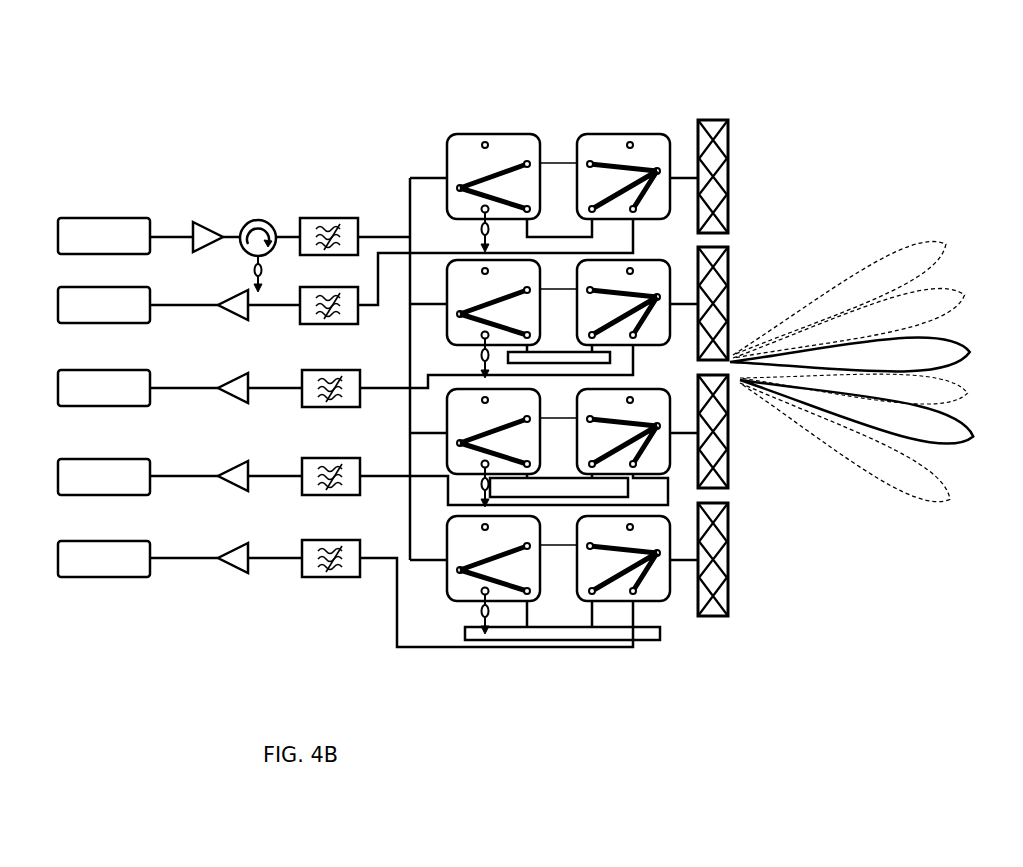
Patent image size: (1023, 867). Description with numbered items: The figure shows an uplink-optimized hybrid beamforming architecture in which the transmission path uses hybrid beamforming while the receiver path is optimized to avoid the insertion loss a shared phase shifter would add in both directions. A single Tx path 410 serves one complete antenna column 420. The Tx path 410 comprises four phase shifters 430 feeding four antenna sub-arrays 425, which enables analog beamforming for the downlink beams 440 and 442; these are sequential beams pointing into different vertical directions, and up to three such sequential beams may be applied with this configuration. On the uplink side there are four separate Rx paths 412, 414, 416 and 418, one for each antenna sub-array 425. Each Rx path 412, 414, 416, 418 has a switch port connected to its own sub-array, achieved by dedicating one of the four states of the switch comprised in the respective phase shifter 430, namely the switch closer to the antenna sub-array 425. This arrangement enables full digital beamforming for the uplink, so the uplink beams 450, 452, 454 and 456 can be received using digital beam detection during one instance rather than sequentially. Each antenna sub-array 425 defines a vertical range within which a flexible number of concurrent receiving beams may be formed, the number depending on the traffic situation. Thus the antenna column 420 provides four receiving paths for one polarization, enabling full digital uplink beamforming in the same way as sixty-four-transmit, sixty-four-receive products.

The Tx path 410 is at (212, 255).
The Rx path 412 is at (324, 273).
The Rx path 414 is at (324, 376).
The Rx path 416 is at (341, 481).
The Rx path 418 is at (324, 593).
The antenna column 420 is at (718, 84).
The antenna sub-array 425 is at (737, 368).
The phase shifter 430 is at (671, 110).
The downlink beam 440 is at (867, 356).
The downlink beam 442 is at (869, 408).
The uplink beam 450 is at (855, 299).
The uplink beam 452 is at (863, 326).
The uplink beam 454 is at (874, 385).
The uplink beam 456 is at (858, 441).